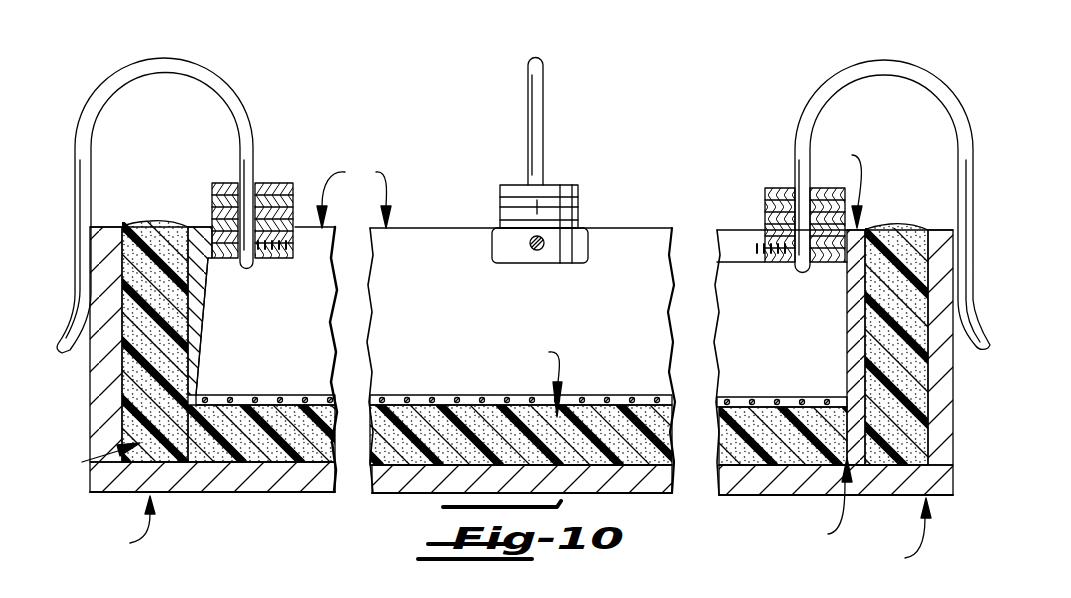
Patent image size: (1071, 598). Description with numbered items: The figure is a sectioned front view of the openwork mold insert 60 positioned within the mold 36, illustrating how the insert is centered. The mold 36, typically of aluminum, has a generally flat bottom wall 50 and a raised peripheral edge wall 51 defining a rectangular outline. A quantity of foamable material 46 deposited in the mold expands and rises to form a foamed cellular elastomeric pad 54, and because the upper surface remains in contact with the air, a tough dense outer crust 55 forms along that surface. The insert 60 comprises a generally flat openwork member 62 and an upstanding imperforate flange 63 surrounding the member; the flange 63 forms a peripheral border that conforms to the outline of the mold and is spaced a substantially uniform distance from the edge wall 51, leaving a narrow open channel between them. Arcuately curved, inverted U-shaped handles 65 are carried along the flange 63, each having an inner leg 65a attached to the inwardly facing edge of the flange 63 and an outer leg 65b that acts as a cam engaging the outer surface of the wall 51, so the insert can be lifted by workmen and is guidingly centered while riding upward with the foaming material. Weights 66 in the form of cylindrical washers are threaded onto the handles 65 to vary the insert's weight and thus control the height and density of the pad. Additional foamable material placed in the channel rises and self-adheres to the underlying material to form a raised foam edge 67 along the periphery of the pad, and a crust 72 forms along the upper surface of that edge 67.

The mold 36 is at (515, 535).
The foamable material 46 is at (316, 455).
The bottom wall 50 is at (236, 480).
The peripheral edge wall 51 is at (104, 383).
The foamed cellular elastomeric pad 54 is at (451, 442).
The outer crust 55 is at (320, 398).
The openwork mold insert 60 is at (589, 182).
The openwork member 62 is at (265, 398).
The imperforate flange 63 is at (205, 228).
The handles 65 is at (172, 56).
The inner leg 65a is at (240, 154).
The outer leg 65b is at (122, 176).
The weights 66 is at (271, 184).
The raised foam edge 67 is at (207, 282).
The crust 72 is at (148, 225).